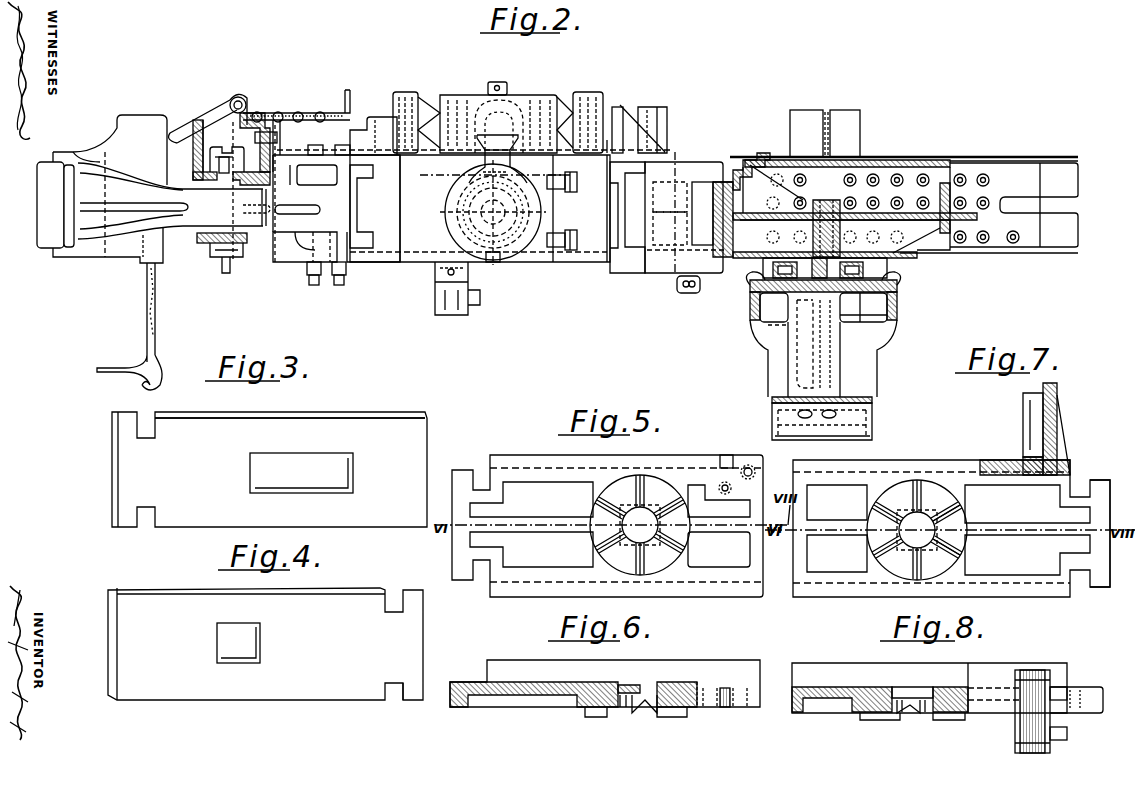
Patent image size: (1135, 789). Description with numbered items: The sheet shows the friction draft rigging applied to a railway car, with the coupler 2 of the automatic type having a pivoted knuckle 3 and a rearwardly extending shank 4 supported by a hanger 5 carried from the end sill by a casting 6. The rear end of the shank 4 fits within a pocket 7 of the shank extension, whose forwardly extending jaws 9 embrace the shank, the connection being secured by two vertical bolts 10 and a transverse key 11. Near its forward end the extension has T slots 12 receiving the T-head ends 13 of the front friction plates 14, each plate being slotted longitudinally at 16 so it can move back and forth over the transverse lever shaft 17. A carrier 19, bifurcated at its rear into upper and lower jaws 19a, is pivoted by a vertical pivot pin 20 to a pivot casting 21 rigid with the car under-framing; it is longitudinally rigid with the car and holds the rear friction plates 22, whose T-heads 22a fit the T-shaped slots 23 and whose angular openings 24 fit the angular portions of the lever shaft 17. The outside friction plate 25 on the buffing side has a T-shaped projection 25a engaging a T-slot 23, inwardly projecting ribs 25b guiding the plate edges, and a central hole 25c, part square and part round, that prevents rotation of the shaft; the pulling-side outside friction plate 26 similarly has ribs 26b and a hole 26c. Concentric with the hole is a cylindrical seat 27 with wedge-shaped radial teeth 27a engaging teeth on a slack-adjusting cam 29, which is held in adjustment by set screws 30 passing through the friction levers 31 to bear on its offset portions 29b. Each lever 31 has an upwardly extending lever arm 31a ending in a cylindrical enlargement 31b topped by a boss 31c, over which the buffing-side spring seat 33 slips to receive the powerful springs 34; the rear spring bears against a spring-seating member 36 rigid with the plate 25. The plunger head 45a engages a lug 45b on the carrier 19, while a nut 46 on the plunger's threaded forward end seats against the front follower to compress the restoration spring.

In FIG. 2, the coupler 2 is at (110, 189).
In FIG. 2, the pivoted knuckle 3 is at (42, 203).
In FIG. 2, the shank 4 is at (172, 201).
In FIG. 2, the hanger 5 is at (215, 168).
In FIG. 2, the casting 6 is at (207, 127).
In FIG. 2, the pocket 7 is at (313, 176).
In FIG. 2, the jaws 9 is at (297, 200).
In FIG. 2, the vertical bolts 10 is at (337, 285).
In FIG. 2, the transverse key 11 is at (308, 209).
In FIG. 2, the T slots 12 is at (347, 217).
In FIG. 3, the T-head ends 13 is at (257, 469).
In FIG. 2, the front friction plates 14 is at (375, 208).
In FIG. 3, the front friction plates 14 is at (290, 449).
In FIG. 3, the longitudinal slot 16 is at (301, 473).
In FIG. 2, the lever shaft 17 is at (456, 233).
In FIG. 2, the carrier 19 is at (665, 262).
In FIG. 2, the upper and lower jaws 19a is at (752, 163).
In FIG. 2, the pivot pin 20 is at (690, 295).
In FIG. 2, the pivot casting 21 is at (845, 211).
In FIG. 4, the rear friction plates 22 is at (265, 644).
In FIG. 4, the T-heads 22a is at (410, 700).
In FIG. 2, the T-shaped slots 23 is at (632, 264).
In FIG. 4, the angular openings 24 is at (260, 641).
In FIG. 2, the outside friction plate 25 is at (581, 208).
In FIG. 7, the outside friction plate 25 is at (897, 478).
In FIG. 7, the T-shaped projection 25a is at (1098, 486).
In FIG. 8, the T-shaped projection 25a is at (1090, 695).
In FIG. 7, the ledges or ribs 25b is at (953, 470).
In FIG. 8, the ledges or ribs 25b is at (842, 688).
In FIG. 7, the hole 25c is at (917, 530).
In FIG. 8, the hole 25c is at (917, 690).
In FIG. 5, the outside friction plate 26 is at (548, 475).
In FIG. 6, the ribs 26b is at (607, 678).
In FIG. 6, the hole 26c is at (645, 690).
In FIG. 7, the cylindrical seat 27 is at (963, 513).
In FIG. 7, the wedge-shaped radial teeth 27a is at (965, 525).
In FIG. 8, the wedge-shaped radial teeth 27a is at (928, 712).
In FIG. 2, the slack-adjusting cam 29 is at (452, 213).
In FIG. 2, the offset portions 29b is at (493, 260).
In FIG. 2, the set screws 30 is at (560, 231).
In FIG. 2, the friction levers 31 is at (458, 193).
In FIG. 2, the lever arm 31a is at (485, 157).
In FIG. 2, the cylindrical enlargement 31b is at (511, 125).
In FIG. 2, the boss 31c is at (497, 82).
In FIG. 2, the spring seat 33 is at (467, 100).
In FIG. 2, the springs 34 is at (420, 103).
In FIG. 7, the spring-seating member 36 is at (1035, 430).
In FIG. 8, the spring-seating member 36 is at (1023, 727).
In FIG. 2, the head 45a is at (660, 114).
In FIG. 2, the lug 45b is at (625, 112).
In FIG. 2, the nut 46 is at (352, 152).